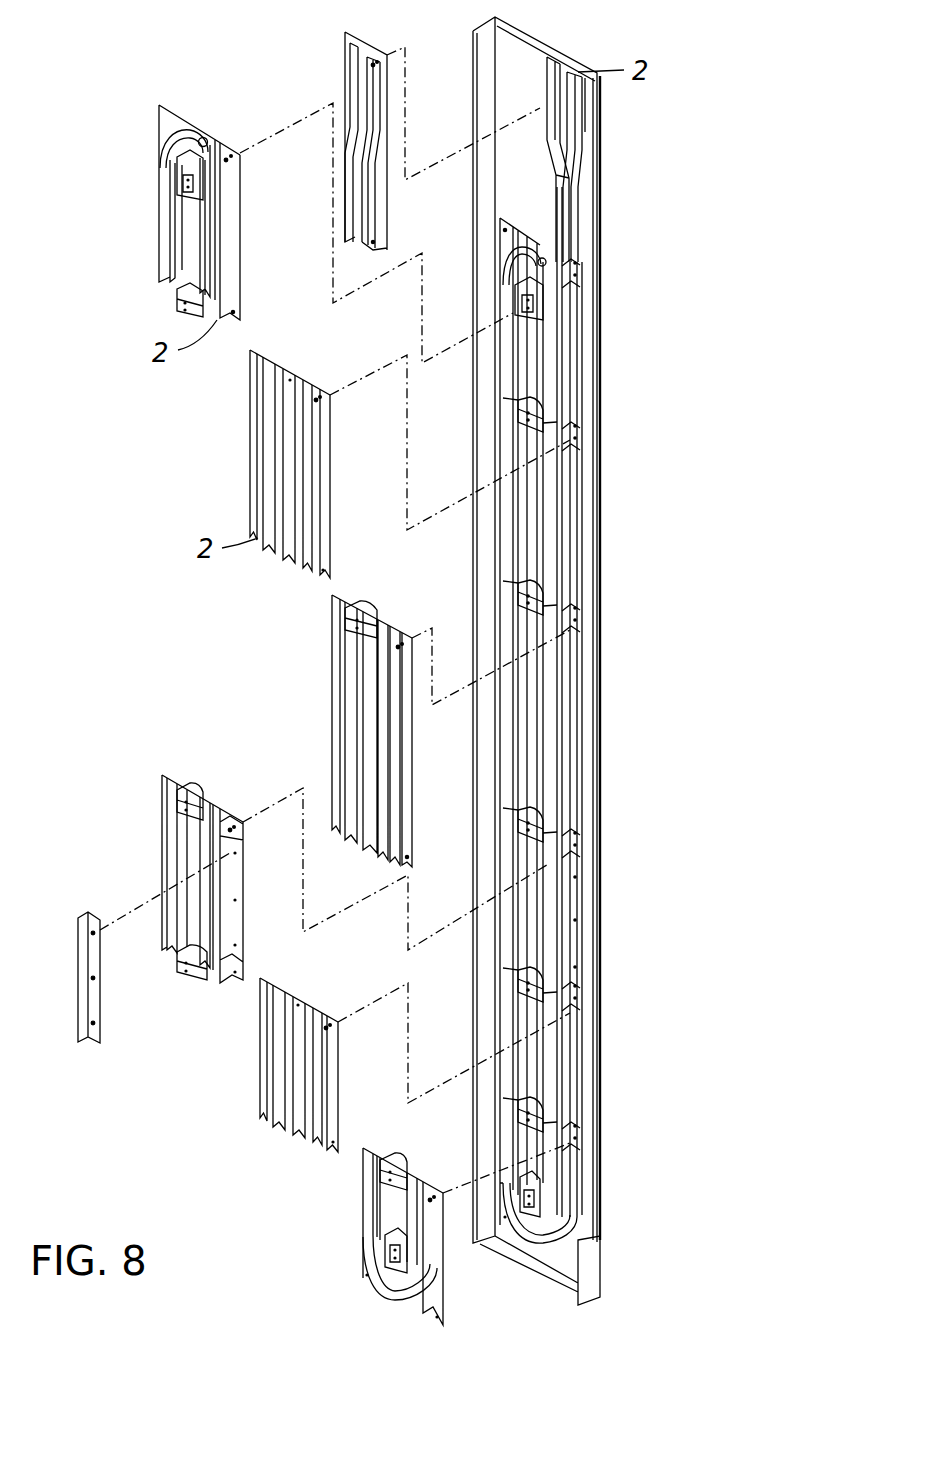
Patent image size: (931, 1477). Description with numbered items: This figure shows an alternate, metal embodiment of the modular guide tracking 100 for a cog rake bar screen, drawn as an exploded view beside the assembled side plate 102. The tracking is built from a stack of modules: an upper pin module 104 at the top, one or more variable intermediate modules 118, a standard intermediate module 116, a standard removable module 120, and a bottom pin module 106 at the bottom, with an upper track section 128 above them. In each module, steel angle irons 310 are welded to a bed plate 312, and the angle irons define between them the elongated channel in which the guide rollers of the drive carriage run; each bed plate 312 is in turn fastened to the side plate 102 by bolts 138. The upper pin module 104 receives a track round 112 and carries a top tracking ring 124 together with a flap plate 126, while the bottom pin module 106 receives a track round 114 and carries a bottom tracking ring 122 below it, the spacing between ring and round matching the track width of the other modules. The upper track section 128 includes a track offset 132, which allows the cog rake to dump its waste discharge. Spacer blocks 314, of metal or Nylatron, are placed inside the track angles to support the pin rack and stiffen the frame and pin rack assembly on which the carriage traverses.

The guide tracking 100 is at (652, 658).
The side plate 102 is at (518, 34).
The upper pin module 104 is at (152, 183).
The bottom pin module 106 is at (357, 1217).
The track round 112 is at (183, 175).
The track round 114 is at (395, 1270).
The standard intermediate module 116 is at (328, 732).
The variable intermediate module 118 is at (240, 435).
The standard removable module 120 is at (157, 843).
The bottom tracking ring 122 is at (398, 1292).
The top tracking ring 124 is at (182, 140).
The flap plate 126 is at (203, 138).
The upper track section 128 is at (338, 62).
The track offset 132 is at (573, 163).
The bolts 138 is at (572, 277).
The angle irons 310 is at (575, 225).
The bed plate 312 is at (160, 127).
The spacer blocks 314 is at (538, 400).